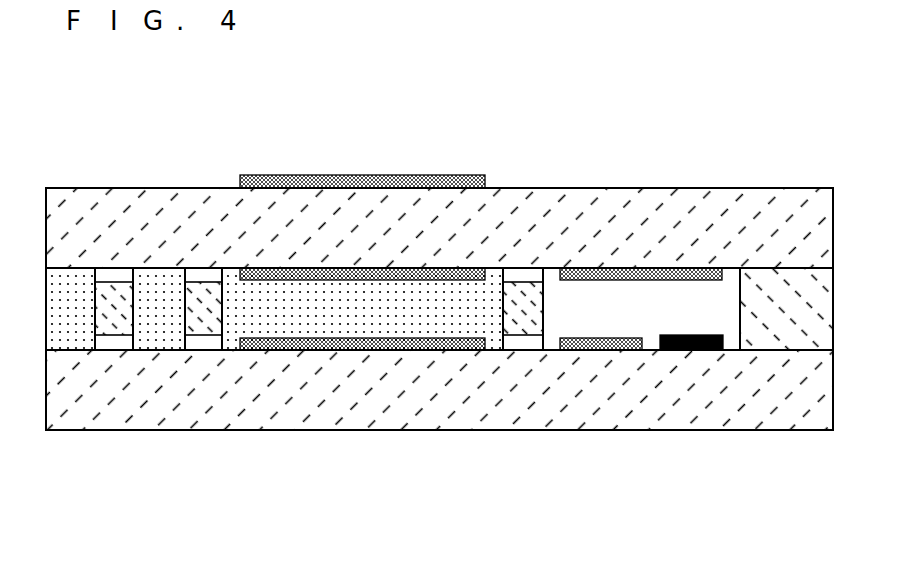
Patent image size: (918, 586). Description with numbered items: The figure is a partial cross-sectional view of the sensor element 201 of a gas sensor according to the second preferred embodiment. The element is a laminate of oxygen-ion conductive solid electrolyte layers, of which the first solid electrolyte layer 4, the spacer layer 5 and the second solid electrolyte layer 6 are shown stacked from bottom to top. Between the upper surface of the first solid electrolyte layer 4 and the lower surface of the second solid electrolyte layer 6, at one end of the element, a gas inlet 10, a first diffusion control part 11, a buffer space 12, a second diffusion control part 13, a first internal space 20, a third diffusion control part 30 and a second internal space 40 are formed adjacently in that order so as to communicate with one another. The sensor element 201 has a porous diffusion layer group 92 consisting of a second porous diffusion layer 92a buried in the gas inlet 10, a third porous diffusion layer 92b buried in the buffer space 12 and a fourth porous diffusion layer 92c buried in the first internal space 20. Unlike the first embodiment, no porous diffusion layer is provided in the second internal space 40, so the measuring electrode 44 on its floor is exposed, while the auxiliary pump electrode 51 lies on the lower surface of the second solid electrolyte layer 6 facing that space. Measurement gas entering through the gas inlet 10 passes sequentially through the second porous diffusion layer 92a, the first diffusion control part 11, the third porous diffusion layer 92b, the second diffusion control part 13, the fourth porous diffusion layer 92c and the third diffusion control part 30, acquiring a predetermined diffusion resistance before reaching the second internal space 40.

The sensor element 201 is at (103, 114).
The first solid electrolyte layer 4 is at (820, 380).
The spacer layer 5 is at (825, 307).
The second solid electrolyte layer 6 is at (820, 236).
The gas inlet 10 is at (60, 313).
The first diffusion control part 11 is at (117, 275).
The buffer space 12 is at (160, 275).
The second diffusion control part 13 is at (208, 275).
The first internal space 20 is at (342, 313).
The third diffusion control part 30 is at (522, 276).
The second internal space 40 is at (685, 295).
The measuring electrode 44 is at (690, 350).
The auxiliary pump electrode 51 is at (627, 268).
The porous diffusion layer group 92 is at (52, 498).
The second porous diffusion layer 92a is at (66, 322).
The third porous diffusion layer 92b is at (157, 330).
The fourth porous diffusion layer 92c is at (236, 328).